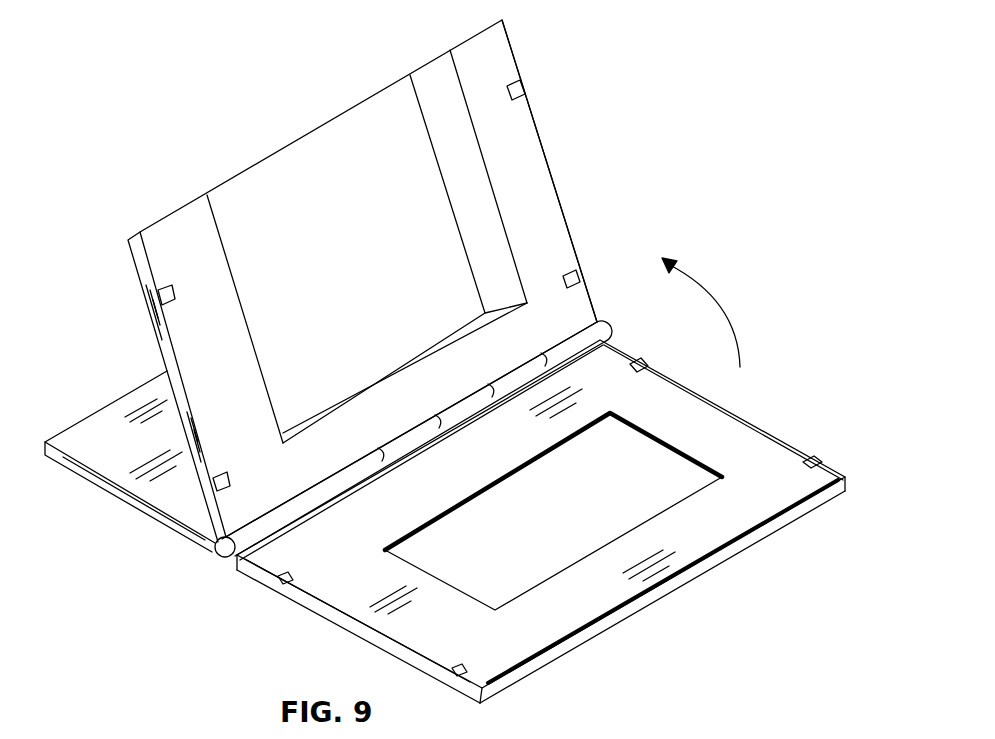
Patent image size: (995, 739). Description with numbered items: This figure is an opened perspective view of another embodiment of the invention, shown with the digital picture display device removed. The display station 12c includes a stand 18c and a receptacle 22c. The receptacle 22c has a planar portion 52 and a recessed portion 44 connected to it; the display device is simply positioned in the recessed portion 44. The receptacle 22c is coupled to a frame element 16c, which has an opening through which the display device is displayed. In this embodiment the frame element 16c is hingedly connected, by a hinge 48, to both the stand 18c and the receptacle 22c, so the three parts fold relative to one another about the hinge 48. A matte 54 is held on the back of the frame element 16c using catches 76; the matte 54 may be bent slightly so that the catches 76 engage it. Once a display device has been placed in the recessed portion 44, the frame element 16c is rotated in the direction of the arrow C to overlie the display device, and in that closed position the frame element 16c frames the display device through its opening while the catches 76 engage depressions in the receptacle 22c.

The display station 12c is at (326, 80).
The recessed portion 44 is at (270, 192).
The receptacle 22c is at (543, 148).
The planar portion 52 is at (556, 264).
The hinge 48 is at (603, 331).
The frame element 16c is at (786, 466).
The matte 54 is at (846, 477).
The stand 18c is at (138, 503).
The catches 76 is at (278, 580).
The arrow C is at (724, 302).